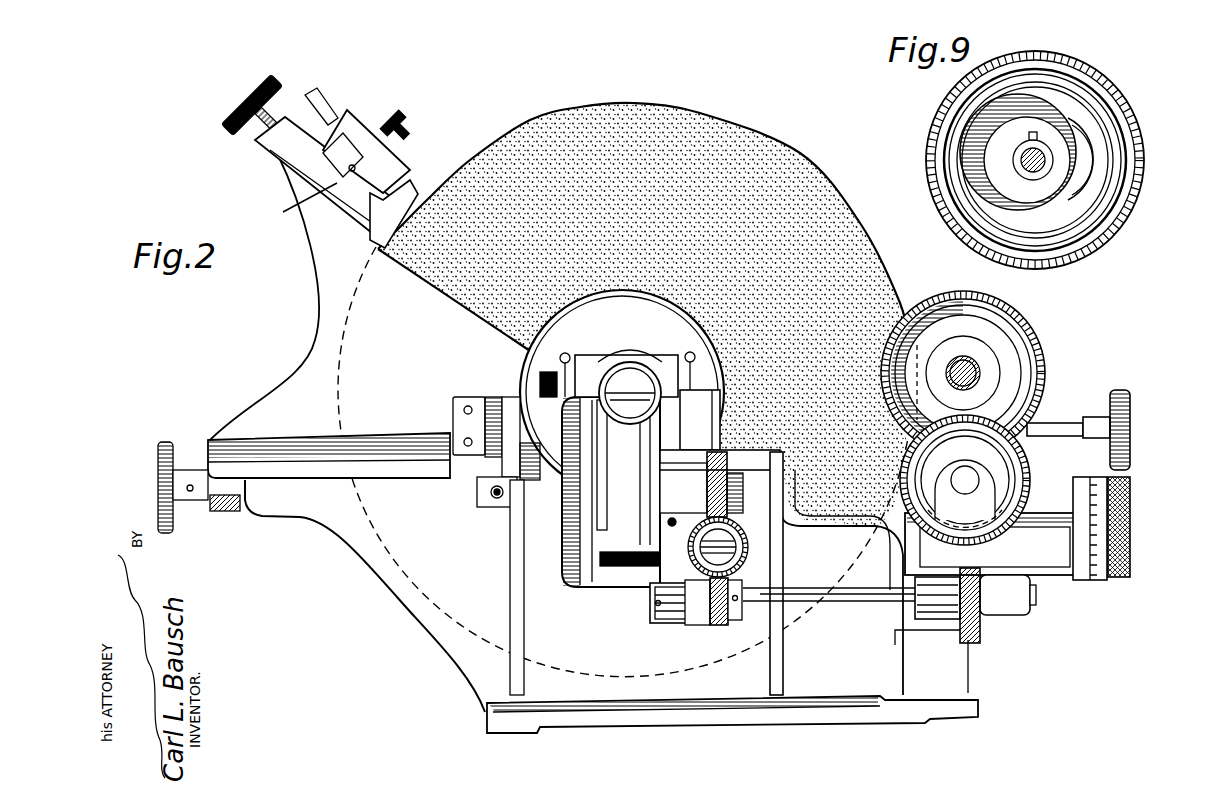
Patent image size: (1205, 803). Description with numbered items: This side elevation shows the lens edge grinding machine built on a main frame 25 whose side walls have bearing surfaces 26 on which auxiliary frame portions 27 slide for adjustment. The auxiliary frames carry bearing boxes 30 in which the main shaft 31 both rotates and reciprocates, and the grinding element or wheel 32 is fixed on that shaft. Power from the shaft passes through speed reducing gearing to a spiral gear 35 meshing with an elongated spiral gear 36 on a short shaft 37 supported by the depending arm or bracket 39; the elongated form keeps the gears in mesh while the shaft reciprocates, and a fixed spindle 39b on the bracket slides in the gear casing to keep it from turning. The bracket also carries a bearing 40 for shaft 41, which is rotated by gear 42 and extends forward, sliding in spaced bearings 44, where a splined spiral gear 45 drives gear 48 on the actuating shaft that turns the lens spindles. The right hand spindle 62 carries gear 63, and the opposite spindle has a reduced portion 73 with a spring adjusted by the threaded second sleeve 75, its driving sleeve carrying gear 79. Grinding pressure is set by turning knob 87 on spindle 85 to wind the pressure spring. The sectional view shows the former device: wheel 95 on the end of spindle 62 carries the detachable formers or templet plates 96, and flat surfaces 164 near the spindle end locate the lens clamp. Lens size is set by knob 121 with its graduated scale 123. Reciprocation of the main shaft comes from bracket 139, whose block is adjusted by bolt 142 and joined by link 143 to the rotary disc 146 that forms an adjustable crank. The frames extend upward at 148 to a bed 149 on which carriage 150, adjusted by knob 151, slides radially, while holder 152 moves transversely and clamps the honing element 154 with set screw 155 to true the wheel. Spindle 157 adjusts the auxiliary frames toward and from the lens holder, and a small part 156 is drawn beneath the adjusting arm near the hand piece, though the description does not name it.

In FIG. 2, the main frame 25 is at (398, 603).
In FIG. 2, the bearing surfaces 26 is at (772, 466).
In FIG. 2, the auxiliary frame portions 27 is at (692, 407).
In FIG. 2, the bearing boxes 30 is at (590, 366).
In FIG. 2, the main shaft 31 is at (645, 368).
In FIG. 2, the grinding element or wheel 32 is at (787, 168).
In FIG. 2, the spiral gear 35 is at (715, 450).
In FIG. 2, the elongated spiral gear 36 is at (729, 515).
In FIG. 2, the short shaft 37 is at (735, 536).
In FIG. 2, the arm or bracket 39 is at (718, 414).
In FIG. 2, the fixed spindle 39b is at (670, 520).
In FIG. 2, the bearing 40 is at (683, 625).
In FIG. 2, the shaft 41 is at (870, 593).
In FIG. 2, the gear 42 is at (720, 627).
In FIG. 2, the spaced bearings 44 is at (893, 622).
In FIG. 2, the spiral gear 45 is at (963, 625).
In FIG. 2, the gear 48 is at (1027, 480).
In FIG. 9, the right hand spindle 62 is at (1045, 162).
In FIG. 9, the gear 63 is at (1105, 80).
In FIG. 2, the reduced portion 73 is at (965, 365).
In FIG. 2, the second sleeve 75 is at (978, 372).
In FIG. 2, the driving gear 79 is at (1030, 360).
In FIG. 2, the spindle 85 is at (1057, 424).
In FIG. 2, the finger piece or knob 87 is at (1122, 426).
In FIG. 9, the wheel 95 is at (1080, 130).
In FIG. 9, the formers or templet plates 96 is at (1080, 152).
In FIG. 2, the hand piece or knob 121 is at (1130, 512).
In FIG. 2, the scale 123 is at (1088, 492).
In FIG. 2, the bracket 139 is at (488, 463).
In FIG. 2, the bolt 142 is at (478, 493).
In FIG. 2, the link 143 is at (522, 505).
In FIG. 2, the rotary disc 146 is at (565, 578).
In FIG. 2, the rearward and upward extension 148 is at (322, 305).
In FIG. 2, the bed 149 is at (337, 178).
In FIG. 2, the carriage 150 is at (352, 212).
In FIG. 2, the adjusting knob 151 is at (255, 96).
In FIG. 2, the holder 152 is at (366, 122).
In FIG. 2, the honing element 154 is at (400, 170).
In FIG. 2, the set screw 155 is at (400, 126).
In FIG. 2, the block 156 is at (224, 509).
In FIG. 2, the spindle 157 is at (192, 446).
In FIG. 9, the flat surfaces 164 is at (952, 106).